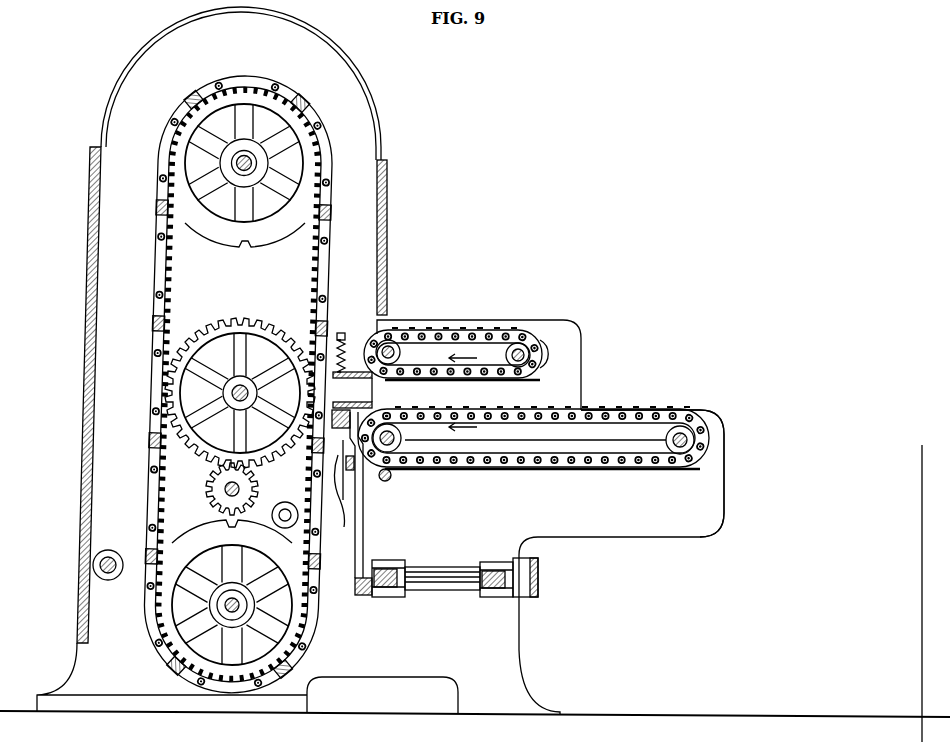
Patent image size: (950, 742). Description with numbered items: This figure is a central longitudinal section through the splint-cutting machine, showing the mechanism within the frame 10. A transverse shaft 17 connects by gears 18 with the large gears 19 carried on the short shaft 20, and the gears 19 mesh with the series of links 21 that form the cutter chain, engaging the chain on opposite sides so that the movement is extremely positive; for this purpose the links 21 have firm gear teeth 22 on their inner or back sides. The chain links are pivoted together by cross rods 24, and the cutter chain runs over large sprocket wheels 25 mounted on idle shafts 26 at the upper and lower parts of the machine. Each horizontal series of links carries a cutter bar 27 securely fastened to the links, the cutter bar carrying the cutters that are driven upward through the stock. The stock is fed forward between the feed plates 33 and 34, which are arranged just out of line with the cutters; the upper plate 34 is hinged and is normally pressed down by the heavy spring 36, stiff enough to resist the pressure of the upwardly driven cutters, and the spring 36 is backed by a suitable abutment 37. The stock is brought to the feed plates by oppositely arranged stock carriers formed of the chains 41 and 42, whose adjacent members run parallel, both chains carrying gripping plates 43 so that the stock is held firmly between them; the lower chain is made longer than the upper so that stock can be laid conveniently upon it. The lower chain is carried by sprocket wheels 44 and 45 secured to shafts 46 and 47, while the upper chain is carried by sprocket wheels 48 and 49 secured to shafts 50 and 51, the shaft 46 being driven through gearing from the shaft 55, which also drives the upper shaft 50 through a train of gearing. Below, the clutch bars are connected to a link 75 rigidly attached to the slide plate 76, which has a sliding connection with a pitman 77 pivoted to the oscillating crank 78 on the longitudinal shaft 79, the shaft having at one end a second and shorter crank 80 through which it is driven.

The frame 10 is at (365, 117).
The shaft 17 is at (224, 489).
The gears 18 is at (276, 514).
The large gears 19 is at (225, 318).
The short shaft 20 is at (243, 390).
The links 21 is at (328, 268).
The gear teeth 22 is at (318, 262).
The cross rods 24 is at (332, 297).
The sprocket wheels 25 is at (297, 193).
The idle shaft 26 is at (255, 147).
The cutter bar 27 is at (152, 445).
The feed plate 33 is at (352, 403).
The feed plate 34 is at (357, 370).
The spring 36 is at (342, 333).
The abutment 37 is at (366, 320).
The chain 41 is at (590, 413).
The chain 42 is at (542, 352).
The gripping plates 43 is at (545, 357).
The sprocket wheel 44 is at (432, 450).
The sprocket wheel 45 is at (655, 465).
The shaft 46 is at (441, 472).
The shaft 47 is at (681, 455).
The sprocket wheel 48 is at (440, 328).
The sprocket wheel 49 is at (512, 347).
The shaft 50 is at (400, 342).
The shaft 51 is at (530, 350).
The shaft 55 is at (393, 475).
The link 75 is at (338, 493).
The slide plate 76 is at (348, 505).
The pitman 77 is at (368, 482).
The oscillating crank 78 is at (366, 540).
The shaft 79 is at (443, 583).
The crank 80 is at (538, 575).